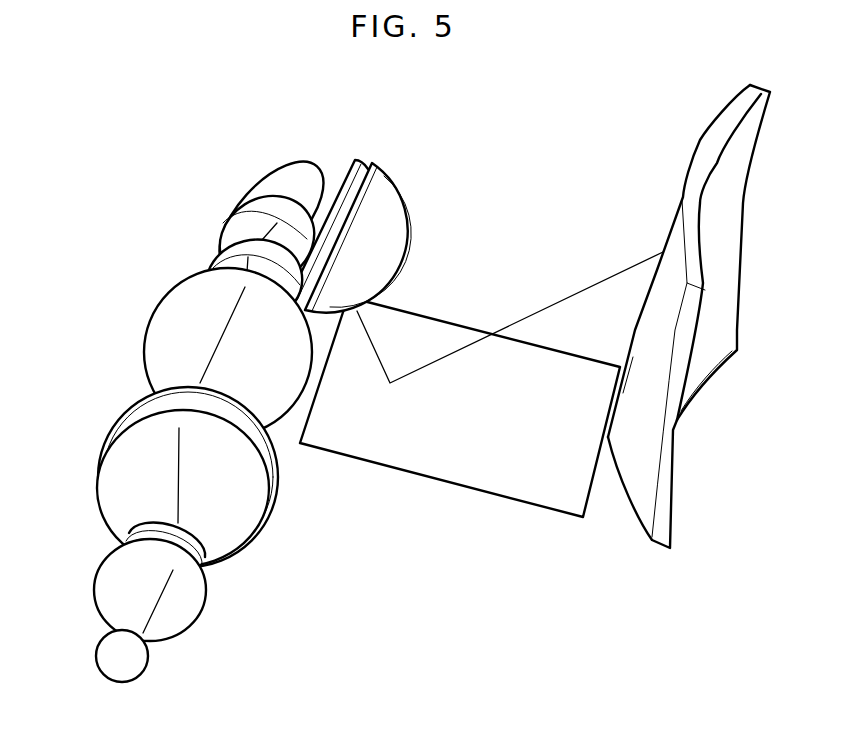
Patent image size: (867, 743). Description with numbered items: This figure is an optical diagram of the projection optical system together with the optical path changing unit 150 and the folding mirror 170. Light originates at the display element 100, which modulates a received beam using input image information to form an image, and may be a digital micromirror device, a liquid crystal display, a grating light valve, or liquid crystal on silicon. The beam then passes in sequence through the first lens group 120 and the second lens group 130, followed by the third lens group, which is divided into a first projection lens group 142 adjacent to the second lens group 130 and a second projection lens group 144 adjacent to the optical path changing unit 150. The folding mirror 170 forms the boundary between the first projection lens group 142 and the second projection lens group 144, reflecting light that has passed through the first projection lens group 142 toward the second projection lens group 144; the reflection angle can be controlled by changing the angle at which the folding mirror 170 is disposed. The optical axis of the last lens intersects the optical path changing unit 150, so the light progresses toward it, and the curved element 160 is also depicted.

The display element 100 is at (110, 662).
The first lens group 120 is at (126, 514).
The second lens group 130 is at (131, 291).
The first projection lens group 142 is at (226, 190).
The second projection lens group 144 is at (389, 166).
The optical path changing unit 150 is at (503, 477).
The curved screen 160 is at (638, 497).
The folding mirror 170 is at (280, 172).